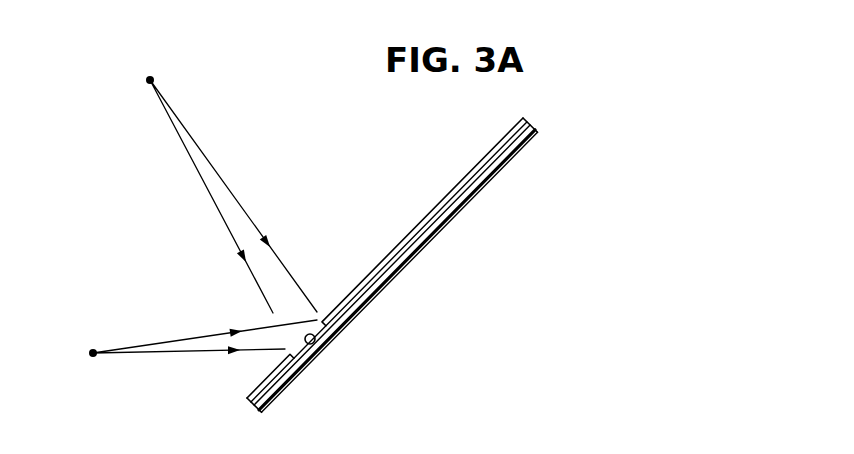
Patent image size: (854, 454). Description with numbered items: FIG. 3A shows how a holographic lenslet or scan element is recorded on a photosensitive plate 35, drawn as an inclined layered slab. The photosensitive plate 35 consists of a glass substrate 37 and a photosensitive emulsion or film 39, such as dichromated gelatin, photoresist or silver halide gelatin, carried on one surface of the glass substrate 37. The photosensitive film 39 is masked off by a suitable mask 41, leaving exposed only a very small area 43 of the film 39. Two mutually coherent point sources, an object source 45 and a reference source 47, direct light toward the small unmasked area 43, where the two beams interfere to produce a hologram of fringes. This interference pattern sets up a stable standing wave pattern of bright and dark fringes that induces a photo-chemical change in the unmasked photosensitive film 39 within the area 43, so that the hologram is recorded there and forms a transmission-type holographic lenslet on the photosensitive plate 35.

The photosensitive plate 35 is at (398, 285).
The glass substrate 37 is at (427, 245).
The photosensitive film 39 is at (472, 182).
The mask 41 is at (392, 253).
The small unmasked area 43 is at (315, 342).
The object source 45 is at (93, 350).
The reference source 47 is at (150, 80).